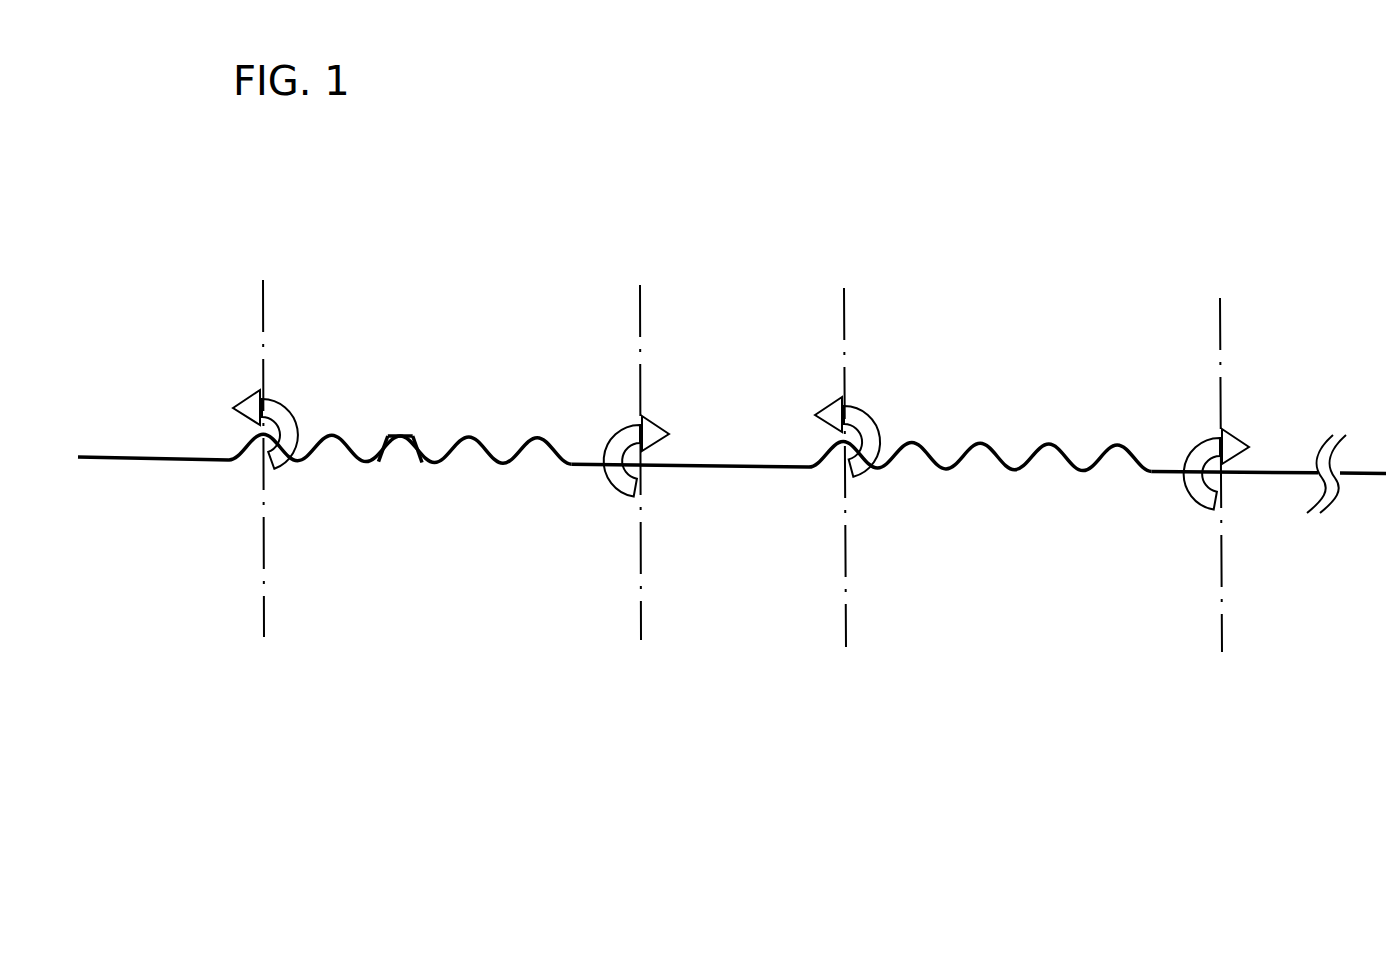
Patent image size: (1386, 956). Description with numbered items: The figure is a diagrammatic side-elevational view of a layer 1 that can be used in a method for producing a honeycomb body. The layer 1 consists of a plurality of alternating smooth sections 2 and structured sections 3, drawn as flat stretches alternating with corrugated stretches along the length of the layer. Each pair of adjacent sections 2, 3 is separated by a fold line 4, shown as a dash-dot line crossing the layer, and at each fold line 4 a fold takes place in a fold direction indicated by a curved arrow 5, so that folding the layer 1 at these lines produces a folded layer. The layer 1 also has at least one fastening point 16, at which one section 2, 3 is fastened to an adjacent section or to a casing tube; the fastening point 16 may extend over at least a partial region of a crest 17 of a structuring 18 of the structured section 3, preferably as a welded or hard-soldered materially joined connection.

The layer 1 is at (735, 380).
The smooth section 2 is at (95, 458).
The structured section 3 is at (366, 461).
The fold line 4 is at (263, 598).
The arrow 5 is at (282, 401).
The fastening point 16 is at (401, 432).
The crest 17 is at (391, 436).
The structuring 18 is at (440, 431).